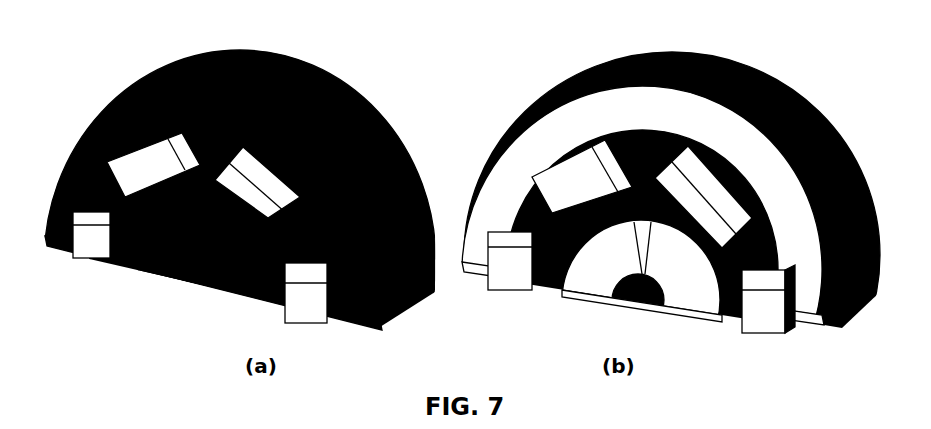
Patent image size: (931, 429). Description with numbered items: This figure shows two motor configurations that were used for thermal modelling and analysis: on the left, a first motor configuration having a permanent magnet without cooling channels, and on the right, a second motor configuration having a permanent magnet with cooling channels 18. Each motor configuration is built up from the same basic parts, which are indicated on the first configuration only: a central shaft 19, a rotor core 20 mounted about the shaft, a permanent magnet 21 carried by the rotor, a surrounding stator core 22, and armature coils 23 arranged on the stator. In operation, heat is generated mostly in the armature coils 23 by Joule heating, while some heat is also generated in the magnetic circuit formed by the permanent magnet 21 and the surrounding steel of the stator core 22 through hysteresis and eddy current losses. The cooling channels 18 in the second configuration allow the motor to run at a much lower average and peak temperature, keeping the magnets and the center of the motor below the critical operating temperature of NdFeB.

The cooling channels 18 is at (756, 280).
The shaft 19 is at (229, 279).
The rotor core 20 is at (207, 237).
The permanent magnet 21 is at (207, 197).
The stator core 22 is at (253, 67).
The armature coils 23 is at (283, 180).